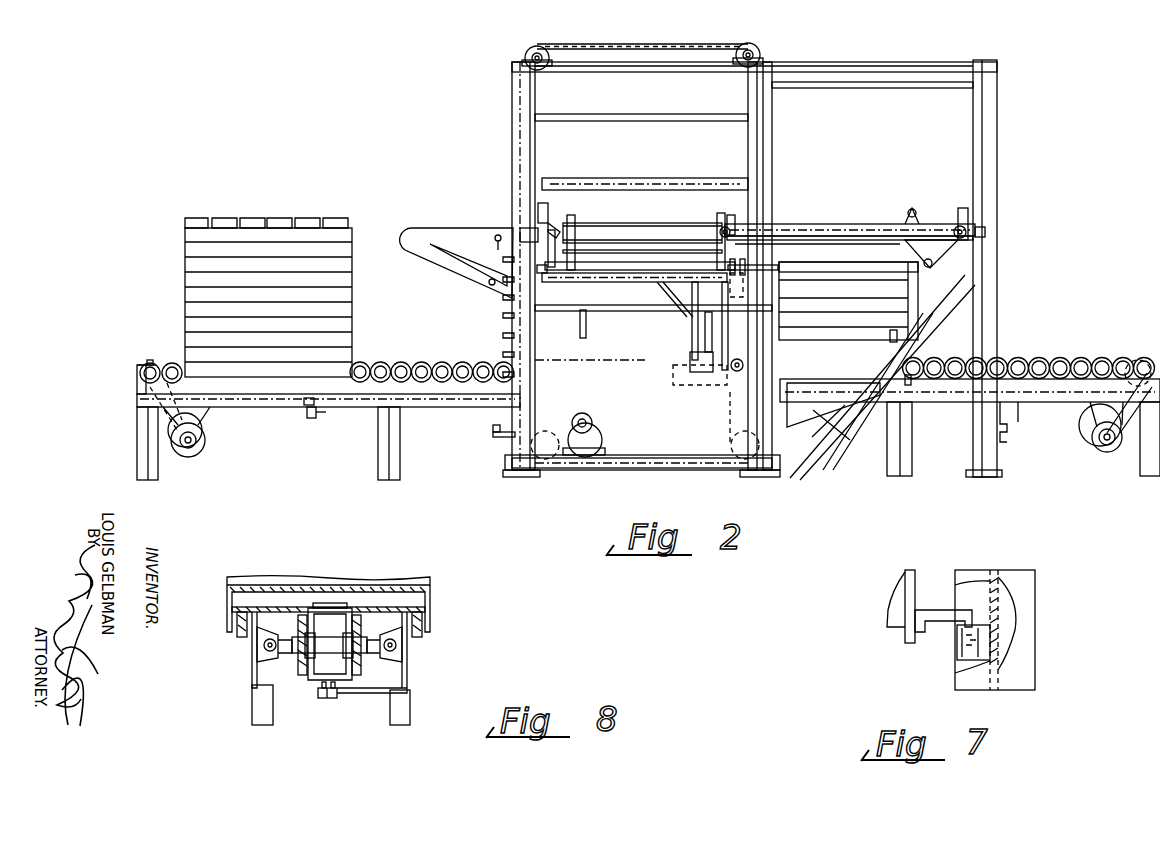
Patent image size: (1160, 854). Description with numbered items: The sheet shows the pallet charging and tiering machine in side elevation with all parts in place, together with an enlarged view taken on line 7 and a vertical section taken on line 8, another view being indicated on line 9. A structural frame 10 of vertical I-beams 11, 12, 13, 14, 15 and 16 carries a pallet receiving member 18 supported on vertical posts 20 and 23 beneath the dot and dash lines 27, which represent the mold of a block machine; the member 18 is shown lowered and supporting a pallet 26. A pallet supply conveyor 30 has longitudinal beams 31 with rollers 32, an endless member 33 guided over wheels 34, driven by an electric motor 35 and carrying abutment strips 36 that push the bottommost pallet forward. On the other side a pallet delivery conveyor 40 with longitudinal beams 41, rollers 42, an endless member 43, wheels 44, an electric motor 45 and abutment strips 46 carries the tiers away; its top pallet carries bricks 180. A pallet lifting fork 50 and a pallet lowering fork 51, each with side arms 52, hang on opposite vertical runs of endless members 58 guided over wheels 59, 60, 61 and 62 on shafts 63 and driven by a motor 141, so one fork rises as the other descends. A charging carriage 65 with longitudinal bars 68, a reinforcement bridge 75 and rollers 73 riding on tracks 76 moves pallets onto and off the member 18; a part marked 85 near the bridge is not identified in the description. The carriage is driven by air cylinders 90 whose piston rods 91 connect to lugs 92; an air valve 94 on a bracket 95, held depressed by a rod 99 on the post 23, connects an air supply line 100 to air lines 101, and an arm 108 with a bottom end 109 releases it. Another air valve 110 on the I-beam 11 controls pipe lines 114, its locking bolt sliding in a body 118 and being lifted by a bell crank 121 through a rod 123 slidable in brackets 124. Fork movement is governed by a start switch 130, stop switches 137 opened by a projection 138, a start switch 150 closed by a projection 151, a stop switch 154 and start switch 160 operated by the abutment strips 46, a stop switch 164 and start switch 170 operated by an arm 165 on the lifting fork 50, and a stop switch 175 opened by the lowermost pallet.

In FIG. 2, the section line 7— 7 is at (726, 432).
In FIG. 2, the section line 8— 8 is at (262, 335).
In FIG. 2, the section line 9 is at (385, 42).
In FIG. 2, the structural frame 10 is at (1000, 78).
In FIG. 7, the structural frame 10 is at (1025, 566).
In FIG. 2, the vertical I-beam 11 is at (515, 98).
In FIG. 2, the vertical I-beam 12 is at (515, 144).
In FIG. 2, the vertical I-beam 13 is at (772, 128).
In FIG. 7, the vertical I-beam 13 is at (1023, 590).
In FIG. 2, the vertical I-beam 14 is at (770, 138).
In FIG. 2, the vertical I-beam 15 is at (985, 112).
In FIG. 2, the vertical I-beam 16 is at (985, 128).
In FIG. 2, the pallet receiving member 18 is at (650, 232).
In FIG. 2, the vertical post 20 is at (580, 330).
In FIG. 2, the vertical post 23 is at (705, 330).
In FIG. 2, the pallet 26 is at (600, 232).
In FIG. 8, the pallet 26 is at (432, 581).
In FIG. 2, the dot and dash lines 27 is at (606, 178).
In FIG. 2, the pallet supply conveyor 30 is at (1075, 360).
In FIG. 2, the longitudinal beams 31 is at (1053, 386).
In FIG. 2, the rollers 32 is at (1042, 358).
In FIG. 2, the endless member 33 is at (1033, 404).
In FIG. 2, the wheels 34 is at (790, 375).
In FIG. 2, the electric motor 35 is at (1100, 447).
In FIG. 2, the abutment strips 36 is at (918, 360).
In FIG. 2, the pallet delivery conveyor 40 is at (415, 412).
In FIG. 8, the pallet delivery conveyor 40 is at (413, 684).
In FIG. 2, the longitudinal beams 41 is at (437, 402).
In FIG. 8, the longitudinal beams 41 is at (408, 668).
In FIG. 2, the rollers 42 is at (442, 362).
In FIG. 8, the rollers 42 is at (422, 633).
In FIG. 2, the endless member 43 is at (232, 410).
In FIG. 8, the endless member 43 is at (303, 616).
In FIG. 2, the wheels 44 is at (140, 390).
In FIG. 2, the electric motor 45 is at (190, 458).
In FIG. 2, the abutment strips 46 is at (148, 362).
In FIG. 8, the abutment strips 46 is at (333, 603).
In FIG. 2, the pallet lifting fork 50 is at (905, 382).
In FIG. 7, the pallet lifting fork 50 is at (912, 566).
In FIG. 2, the pallet lowering fork 51 is at (420, 255).
In FIG. 2, the side arms 52 is at (432, 228).
In FIG. 2, the movable endless members 58 is at (632, 44).
In FIG. 2, the wheel 59 is at (537, 46).
In FIG. 2, the wheel 60 is at (758, 45).
In FIG. 2, the wheel 61 is at (533, 457).
In FIG. 2, the wheel 62 is at (743, 460).
In FIG. 2, the shafts 63 is at (548, 55).
In FIG. 2, the charging carriage 65 is at (802, 228).
In FIG. 2, the longitudinal bar 68 is at (880, 232).
In FIG. 2, the rollers 73 is at (743, 205).
In FIG. 2, the reinforcement bridge 75 is at (958, 212).
In FIG. 2, the tracks 76 is at (813, 250).
In FIG. 2, the pivot link 85 is at (916, 208).
In FIG. 2, the air cylinders 90 is at (608, 282).
In FIG. 2, the piston rods 91 is at (783, 262).
In FIG. 2, the lugs 92 is at (938, 262).
In FIG. 2, the air valve 94 is at (690, 378).
In FIG. 2, the bracket 95 is at (690, 355).
In FIG. 2, the rod 99 is at (700, 370).
In FIG. 2, the air supply line 100 is at (590, 362).
In FIG. 2, the air lines 101 is at (722, 290).
In FIG. 2, the arm 108 is at (920, 272).
In FIG. 2, the bottom end 109 is at (893, 330).
In FIG. 2, the air valve 110 is at (528, 228).
In FIG. 2, the pipe lines 114 is at (540, 274).
In FIG. 2, the body 118 is at (543, 203).
In FIG. 2, the bell crank 121 is at (557, 225).
In FIG. 2, the rod 123 is at (716, 210).
In FIG. 2, the brackets 124 is at (731, 215).
In FIG. 2, the start switch 130 is at (987, 230).
In FIG. 2, the stop switches 137 is at (504, 325).
In FIG. 2, the projection 138 is at (498, 235).
In FIG. 2, the motor 141 is at (533, 442).
In FIG. 2, the start switch 150 is at (492, 434).
In FIG. 2, the projection 151 is at (490, 280).
In FIG. 2, the stop switch 154 is at (318, 414).
In FIG. 8, the stop switch 154 is at (332, 700).
In FIG. 2, the start switch 160 is at (305, 412).
In FIG. 8, the start switch 160 is at (323, 700).
In FIG. 2, the stop switch 164 is at (815, 478).
In FIG. 7, the stop switch 164 is at (966, 645).
In FIG. 7, the arm 165 is at (930, 608).
In FIG. 2, the start switch 170 is at (820, 460).
In FIG. 7, the start switch 170 is at (952, 668).
In FIG. 2, the stop switch 175 is at (732, 368).
In FIG. 2, the bricks 180 is at (258, 220).